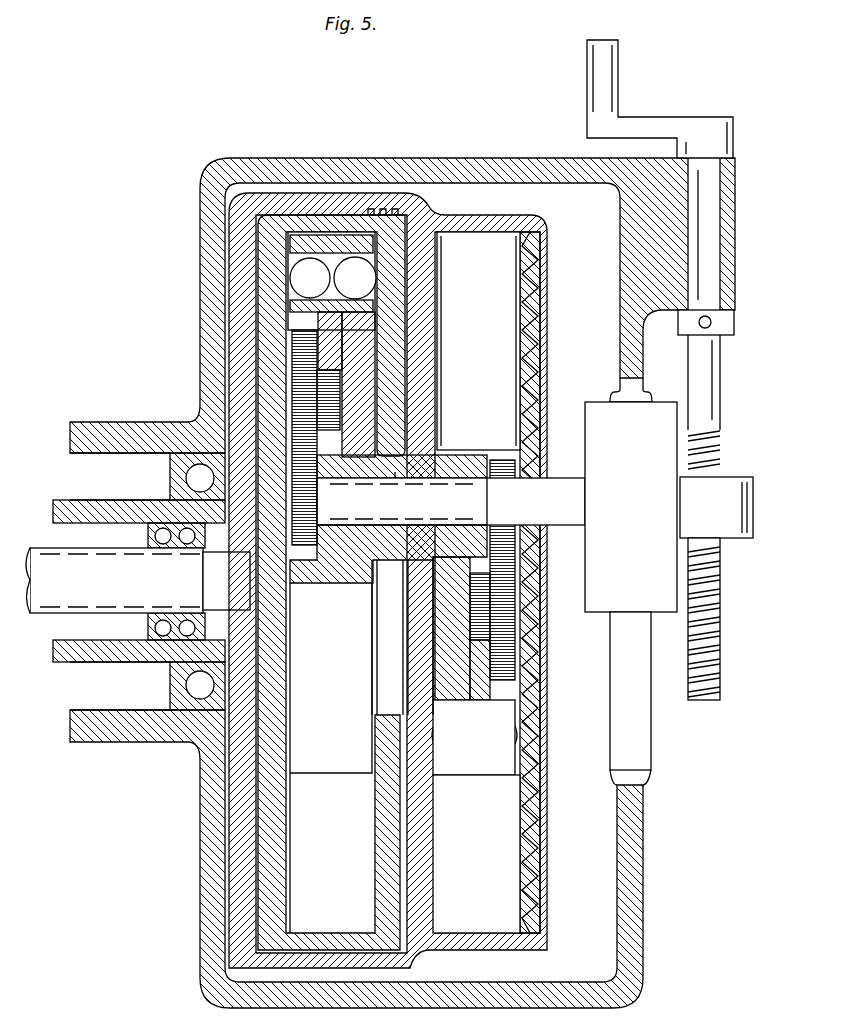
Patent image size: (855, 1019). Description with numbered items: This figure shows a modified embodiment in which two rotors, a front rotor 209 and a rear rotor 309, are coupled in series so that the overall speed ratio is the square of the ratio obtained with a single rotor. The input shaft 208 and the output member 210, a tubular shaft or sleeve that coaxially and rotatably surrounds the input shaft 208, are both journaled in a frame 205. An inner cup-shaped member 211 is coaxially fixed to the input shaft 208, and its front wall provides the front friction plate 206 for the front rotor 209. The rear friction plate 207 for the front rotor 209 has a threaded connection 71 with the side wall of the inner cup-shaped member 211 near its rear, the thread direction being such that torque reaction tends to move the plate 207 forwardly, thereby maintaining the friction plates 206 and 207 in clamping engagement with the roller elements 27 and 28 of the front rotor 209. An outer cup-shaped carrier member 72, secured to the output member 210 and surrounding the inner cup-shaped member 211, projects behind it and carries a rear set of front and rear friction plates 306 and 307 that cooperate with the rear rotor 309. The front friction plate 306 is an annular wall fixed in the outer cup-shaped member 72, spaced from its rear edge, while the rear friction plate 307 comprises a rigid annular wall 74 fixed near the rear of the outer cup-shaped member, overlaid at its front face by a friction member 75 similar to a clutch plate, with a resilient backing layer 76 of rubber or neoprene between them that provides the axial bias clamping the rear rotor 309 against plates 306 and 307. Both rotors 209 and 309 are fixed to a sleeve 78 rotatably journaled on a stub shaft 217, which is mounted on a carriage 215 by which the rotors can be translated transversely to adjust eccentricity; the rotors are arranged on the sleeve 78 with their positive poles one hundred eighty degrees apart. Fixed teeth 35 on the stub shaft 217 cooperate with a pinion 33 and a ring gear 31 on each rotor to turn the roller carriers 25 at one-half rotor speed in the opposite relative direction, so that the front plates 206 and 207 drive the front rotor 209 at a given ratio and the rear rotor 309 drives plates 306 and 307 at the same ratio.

The frame 205 is at (200, 300).
The output member 210 is at (76, 500).
The input shaft 208 is at (134, 590).
The rigid annular wall 74 is at (548, 326).
The friction member 75 is at (512, 363).
The backing layer 76 is at (541, 390).
The inner cup-shaped member 211 is at (303, 215).
The threaded connection 71 is at (385, 222).
The outer cup-shaped carrier member 72 is at (361, 192).
The roller carrier 25 is at (290, 250).
The roller element 27 is at (320, 288).
The roller element 28 is at (365, 288).
The front friction plate 206 is at (300, 358).
The ring gear 31 is at (300, 340).
The pinion 33 is at (312, 397).
The rear friction plate 207 is at (367, 363).
The stub shaft 217 is at (454, 510).
The sleeve 78 is at (395, 472).
The fixed teeth 35 is at (318, 503).
The front rotor 209 is at (334, 760).
The front friction plate 306 is at (441, 322).
The rear friction plate 307 is at (520, 392).
The rear rotor 309 is at (490, 775).
The carriage 215 is at (648, 497).